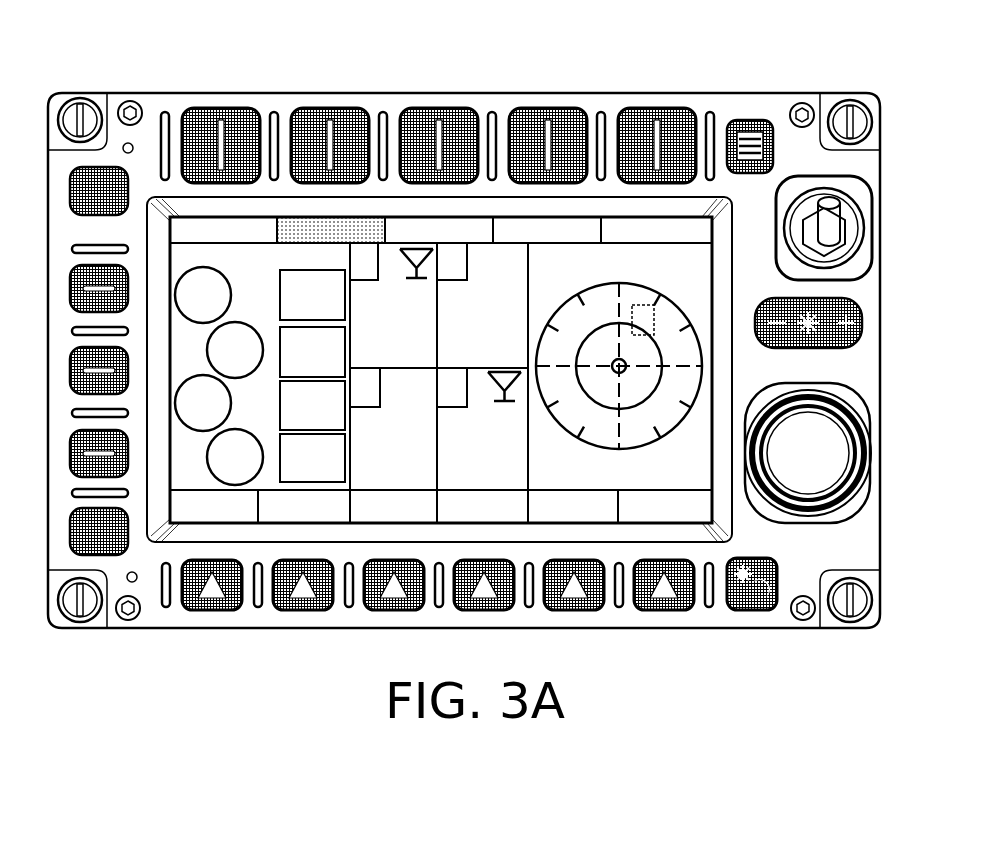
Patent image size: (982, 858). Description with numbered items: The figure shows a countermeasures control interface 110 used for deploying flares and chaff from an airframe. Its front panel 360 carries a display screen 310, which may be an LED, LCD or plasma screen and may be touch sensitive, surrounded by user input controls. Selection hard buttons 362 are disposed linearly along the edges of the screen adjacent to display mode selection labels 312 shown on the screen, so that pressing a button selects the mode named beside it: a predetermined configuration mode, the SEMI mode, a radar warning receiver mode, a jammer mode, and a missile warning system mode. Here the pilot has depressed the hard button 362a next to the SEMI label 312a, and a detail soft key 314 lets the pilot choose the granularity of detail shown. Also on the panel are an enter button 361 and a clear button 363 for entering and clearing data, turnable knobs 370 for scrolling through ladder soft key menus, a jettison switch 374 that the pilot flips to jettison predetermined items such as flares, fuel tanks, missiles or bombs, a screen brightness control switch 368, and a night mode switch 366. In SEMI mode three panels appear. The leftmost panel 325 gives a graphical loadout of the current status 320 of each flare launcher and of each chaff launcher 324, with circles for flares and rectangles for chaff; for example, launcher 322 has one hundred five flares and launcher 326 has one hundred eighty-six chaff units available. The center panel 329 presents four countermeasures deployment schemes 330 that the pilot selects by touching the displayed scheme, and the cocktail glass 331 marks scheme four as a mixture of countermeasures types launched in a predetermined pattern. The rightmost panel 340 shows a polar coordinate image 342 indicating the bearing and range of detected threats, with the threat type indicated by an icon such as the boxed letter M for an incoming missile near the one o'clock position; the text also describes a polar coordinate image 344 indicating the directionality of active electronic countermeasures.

The countermeasures control interface 110 is at (140, 86).
The display screen 310 is at (374, 214).
The display mode selection labels 312 is at (688, 228).
The SEMI label 312a is at (349, 228).
The detail soft key 314 is at (253, 520).
The flare loadout status 320 is at (191, 484).
The flare launcher 322 is at (230, 396).
The chaff launcher 324 is at (338, 485).
The leftmost panel 325 is at (273, 299).
The chaff launcher 326 is at (281, 405).
The center panel 329 is at (516, 280).
The countermeasures deployment schemes 330 is at (481, 480).
The cocktail glass image 331 is at (495, 375).
The rightmost panel 340 is at (575, 473).
The polar coordinate image 342 is at (650, 433).
The polar coordinate image 344 is at (648, 307).
The front panel 360 is at (780, 98).
The enter button 361 is at (70, 193).
The selection hard buttons 362 is at (643, 610).
The hard button 362a is at (315, 106).
The clear button 363 is at (70, 531).
The night mode switch 366 is at (740, 610).
The screen brightness control switch 368 is at (862, 328).
The turnable knobs 370 is at (826, 464).
The jettison switch 374 is at (858, 225).